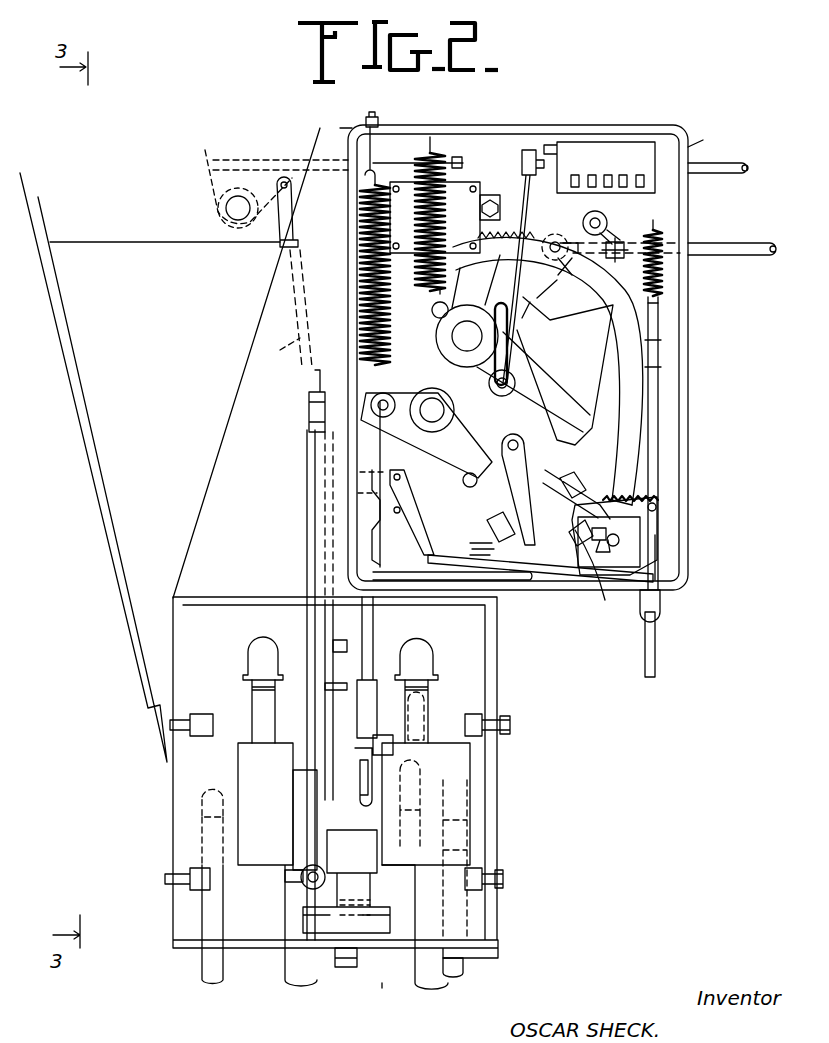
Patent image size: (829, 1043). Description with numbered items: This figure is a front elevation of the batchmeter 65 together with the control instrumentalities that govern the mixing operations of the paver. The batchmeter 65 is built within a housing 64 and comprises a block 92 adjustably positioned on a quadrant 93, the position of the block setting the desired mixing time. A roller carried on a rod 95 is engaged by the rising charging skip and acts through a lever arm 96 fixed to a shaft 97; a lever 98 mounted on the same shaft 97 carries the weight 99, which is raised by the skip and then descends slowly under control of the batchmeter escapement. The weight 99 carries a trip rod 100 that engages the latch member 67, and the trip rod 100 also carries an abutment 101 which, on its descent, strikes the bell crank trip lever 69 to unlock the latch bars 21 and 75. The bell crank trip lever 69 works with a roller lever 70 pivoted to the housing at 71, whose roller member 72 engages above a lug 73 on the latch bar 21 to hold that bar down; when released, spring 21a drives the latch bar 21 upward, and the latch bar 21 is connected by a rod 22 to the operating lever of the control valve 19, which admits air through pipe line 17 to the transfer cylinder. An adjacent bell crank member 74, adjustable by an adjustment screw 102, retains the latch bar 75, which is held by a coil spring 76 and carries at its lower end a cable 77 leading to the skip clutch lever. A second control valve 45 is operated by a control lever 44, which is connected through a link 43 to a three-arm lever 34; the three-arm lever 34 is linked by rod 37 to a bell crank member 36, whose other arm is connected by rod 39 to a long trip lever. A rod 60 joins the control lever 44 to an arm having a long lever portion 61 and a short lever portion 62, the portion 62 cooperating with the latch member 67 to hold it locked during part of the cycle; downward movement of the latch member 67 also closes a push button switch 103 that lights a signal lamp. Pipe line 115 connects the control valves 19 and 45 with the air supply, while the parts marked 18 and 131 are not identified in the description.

The pipe line 17 is at (427, 723).
The plunger cap 18 is at (425, 665).
The control valve 19 is at (467, 777).
The latch bar 21 is at (348, 477).
The spring 21a is at (350, 285).
The rod 22 is at (367, 642).
The three-arm lever 34 is at (345, 670).
The bell crank member 36 is at (213, 188).
The rod 37 is at (279, 358).
The rod 39 is at (745, 172).
The link 43 is at (333, 723).
The control lever 44 is at (313, 802).
The control valve 45 is at (233, 775).
The rod 60 is at (312, 567).
The long lever portion 61 is at (335, 422).
The short lever portion 62 is at (466, 450).
The housing 64 is at (709, 140).
The batchmeter 65 is at (478, 152).
The latch member 67 is at (518, 498).
The bell crank trip lever 69 is at (657, 557).
The roller lever 70 is at (418, 527).
The pivot 71 is at (412, 436).
The roller member 72 is at (420, 532).
The lug 73 is at (348, 513).
The bell crank member 74 is at (623, 530).
The latch bar 75 is at (652, 428).
The coil spring 76 is at (668, 270).
The cable 77 is at (655, 657).
The block 92 is at (624, 240).
The quadrant 93 is at (637, 340).
The rod 95 is at (762, 250).
The lever arm 96 is at (555, 276).
The shaft 97 is at (462, 338).
The lever 98 is at (458, 370).
The weight 99 is at (595, 347).
The trip rod 100 is at (605, 505).
The abutment 101 is at (588, 560).
The adjustment screw 102 is at (615, 549).
The electric push button switch 103 is at (489, 532).
The pipe line 115 is at (462, 965).
The pipe 131 is at (405, 987).